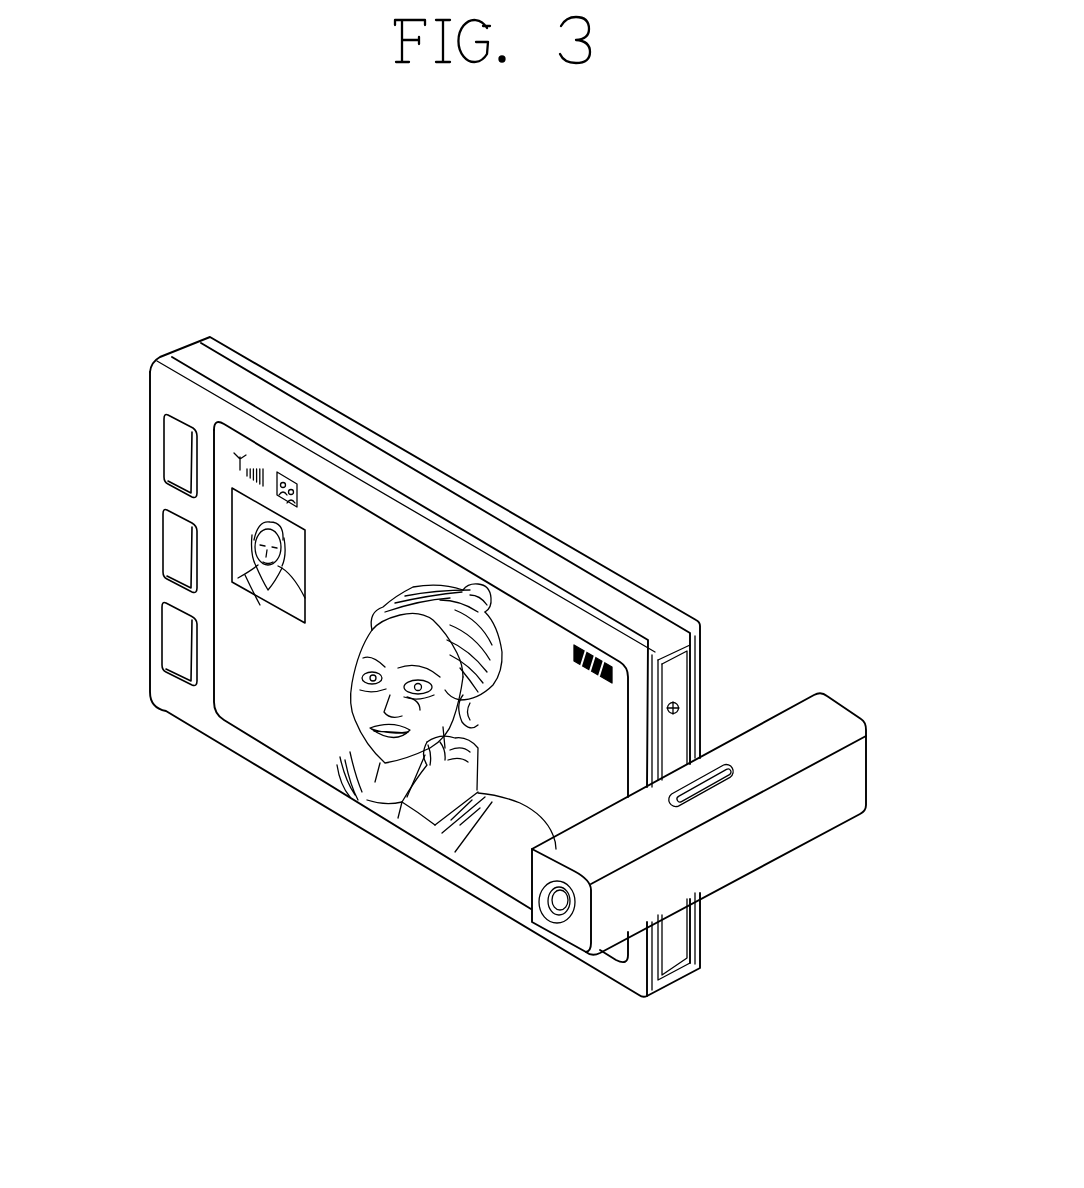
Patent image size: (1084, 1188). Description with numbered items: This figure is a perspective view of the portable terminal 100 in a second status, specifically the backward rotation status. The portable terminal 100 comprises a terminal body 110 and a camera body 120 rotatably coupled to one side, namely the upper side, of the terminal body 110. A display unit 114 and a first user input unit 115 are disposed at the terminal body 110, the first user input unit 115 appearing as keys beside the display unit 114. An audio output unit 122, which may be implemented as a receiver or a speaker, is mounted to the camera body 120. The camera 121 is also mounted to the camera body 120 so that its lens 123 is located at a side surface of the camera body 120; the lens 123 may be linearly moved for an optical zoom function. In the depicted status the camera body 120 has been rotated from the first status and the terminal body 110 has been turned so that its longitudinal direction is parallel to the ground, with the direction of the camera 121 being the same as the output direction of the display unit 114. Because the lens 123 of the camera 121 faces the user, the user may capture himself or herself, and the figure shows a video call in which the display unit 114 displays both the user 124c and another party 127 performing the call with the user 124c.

The portable terminal 100 is at (205, 252).
The terminal body 110 is at (442, 458).
The display unit 114 is at (277, 737).
The first user input unit 115 is at (172, 535).
The another party 127 is at (265, 559).
The user 124c is at (375, 753).
The camera body 120 is at (838, 835).
The camera 121 is at (565, 921).
The audio output unit 122 is at (702, 793).
The lens 123 is at (555, 902).